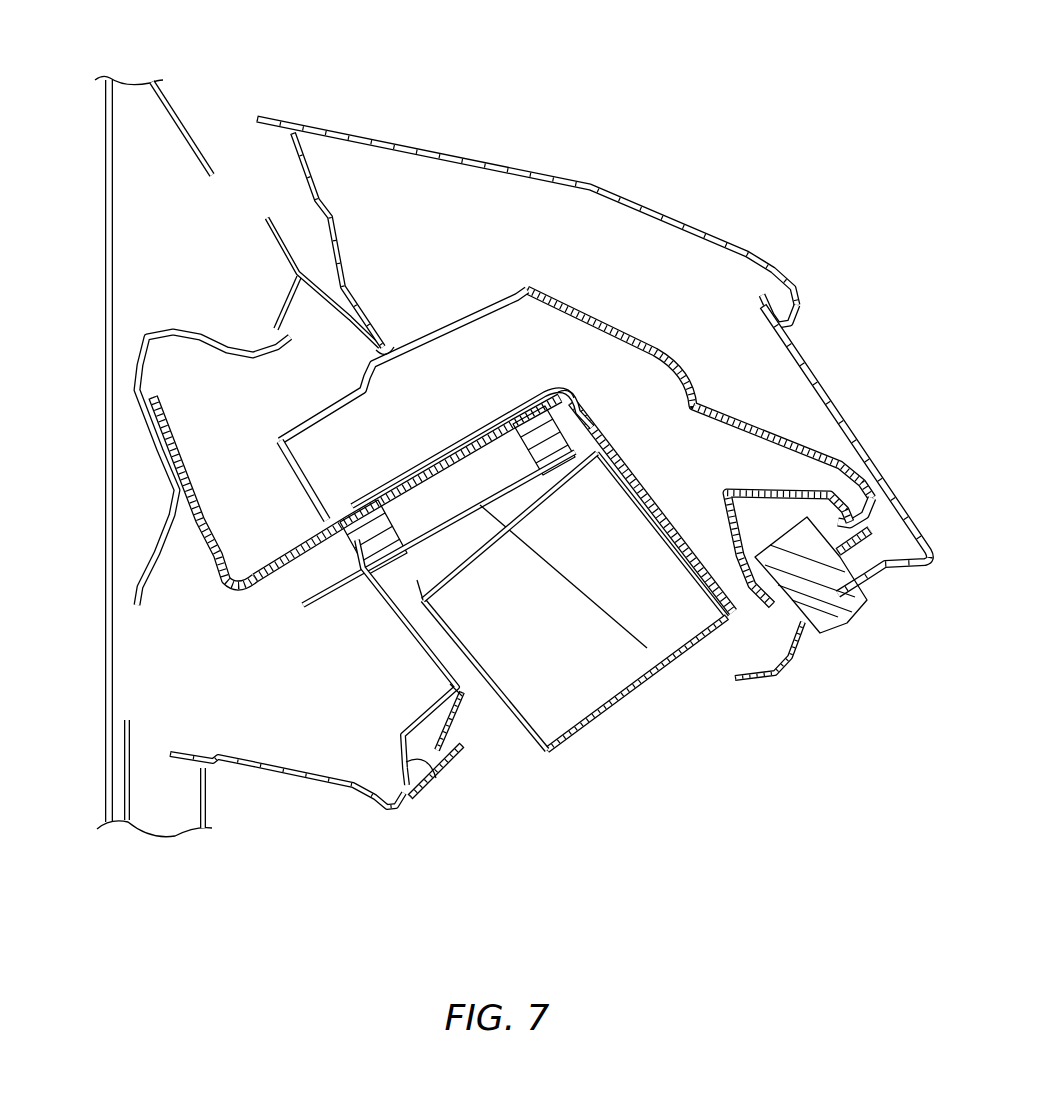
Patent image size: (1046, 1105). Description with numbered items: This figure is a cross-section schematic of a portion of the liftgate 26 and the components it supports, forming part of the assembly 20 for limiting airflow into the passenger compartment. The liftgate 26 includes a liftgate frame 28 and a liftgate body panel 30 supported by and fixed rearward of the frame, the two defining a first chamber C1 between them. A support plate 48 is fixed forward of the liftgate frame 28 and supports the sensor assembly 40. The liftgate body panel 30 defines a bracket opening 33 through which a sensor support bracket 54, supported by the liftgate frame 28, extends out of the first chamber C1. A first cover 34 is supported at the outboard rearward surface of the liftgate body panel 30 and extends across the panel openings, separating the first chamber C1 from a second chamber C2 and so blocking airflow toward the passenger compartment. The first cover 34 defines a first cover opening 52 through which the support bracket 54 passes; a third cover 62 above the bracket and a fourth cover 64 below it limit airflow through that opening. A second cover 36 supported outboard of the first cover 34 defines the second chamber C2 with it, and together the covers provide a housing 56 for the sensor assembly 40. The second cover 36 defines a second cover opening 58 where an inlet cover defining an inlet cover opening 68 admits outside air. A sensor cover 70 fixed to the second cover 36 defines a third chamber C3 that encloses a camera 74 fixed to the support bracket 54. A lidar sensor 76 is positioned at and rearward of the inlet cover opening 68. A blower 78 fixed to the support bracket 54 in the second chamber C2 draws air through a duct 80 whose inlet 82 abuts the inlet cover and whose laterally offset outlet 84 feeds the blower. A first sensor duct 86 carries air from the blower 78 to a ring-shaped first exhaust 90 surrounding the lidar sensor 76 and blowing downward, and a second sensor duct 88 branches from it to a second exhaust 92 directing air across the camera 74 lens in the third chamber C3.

The assembly 20 is at (476, 112).
The liftgate 26 is at (74, 138).
The liftgate frame 28 is at (173, 103).
The liftgate body panel 30 is at (285, 243).
The bracket opening 33 is at (372, 353).
The first cover 34 is at (340, 243).
The second cover 36 is at (703, 220).
The sensor assembly 40 is at (690, 711).
The support plate 48 is at (137, 355).
The first cover opening 52 is at (392, 345).
The sensor support bracket 54 is at (200, 492).
The housing 56 is at (634, 74).
The second cover opening 58 is at (787, 325).
The third cover 62 is at (377, 590).
The fourth cover 64 is at (303, 540).
The inlet cover opening 68 is at (440, 578).
The sensor cover 70 is at (845, 420).
The camera 74 is at (848, 620).
The lidar sensor 76 is at (598, 728).
The blower 78 is at (478, 313).
The duct 80 is at (548, 440).
The inlet 82 is at (482, 509).
The outlet 84 is at (452, 450).
The first sensor duct 86 is at (636, 399).
The second sensor duct 88 is at (857, 473).
The first exhaust 90 is at (688, 558).
The second exhaust 92 is at (855, 517).
The first chamber C1 is at (213, 669).
The second chamber C2 is at (569, 237).
The third chamber C3 is at (781, 402).